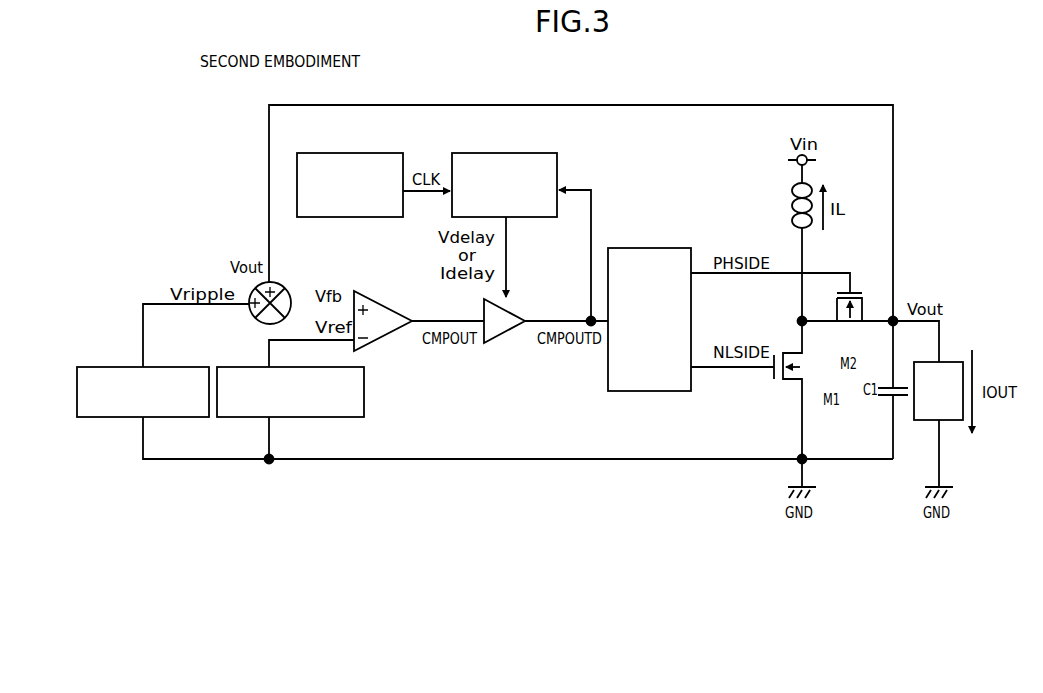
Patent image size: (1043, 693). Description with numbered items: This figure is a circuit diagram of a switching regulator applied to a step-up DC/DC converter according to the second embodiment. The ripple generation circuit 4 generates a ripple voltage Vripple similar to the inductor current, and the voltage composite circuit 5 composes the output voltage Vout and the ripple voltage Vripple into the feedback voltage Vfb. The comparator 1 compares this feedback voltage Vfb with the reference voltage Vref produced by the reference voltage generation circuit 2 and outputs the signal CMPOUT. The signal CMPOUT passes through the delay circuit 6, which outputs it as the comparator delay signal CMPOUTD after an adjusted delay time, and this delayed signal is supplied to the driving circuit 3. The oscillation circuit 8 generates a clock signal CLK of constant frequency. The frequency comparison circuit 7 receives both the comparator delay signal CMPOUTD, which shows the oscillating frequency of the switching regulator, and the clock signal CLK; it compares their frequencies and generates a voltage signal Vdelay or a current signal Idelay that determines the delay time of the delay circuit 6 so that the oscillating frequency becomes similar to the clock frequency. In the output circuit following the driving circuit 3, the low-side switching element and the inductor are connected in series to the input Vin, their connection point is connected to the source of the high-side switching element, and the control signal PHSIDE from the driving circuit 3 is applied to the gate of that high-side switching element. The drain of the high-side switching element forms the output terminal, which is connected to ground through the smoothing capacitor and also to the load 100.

The comparator 1 is at (378, 341).
The reference voltage generation circuit 2 is at (237, 366).
The driving circuit 3 is at (645, 248).
The ripple generation circuit 4 is at (105, 366).
The voltage composite circuit 5 is at (283, 290).
The delay circuit 6 is at (492, 342).
The frequency comparison circuit 7 is at (507, 153).
The oscillation circuit 8 is at (360, 153).
The load 100 is at (953, 361).